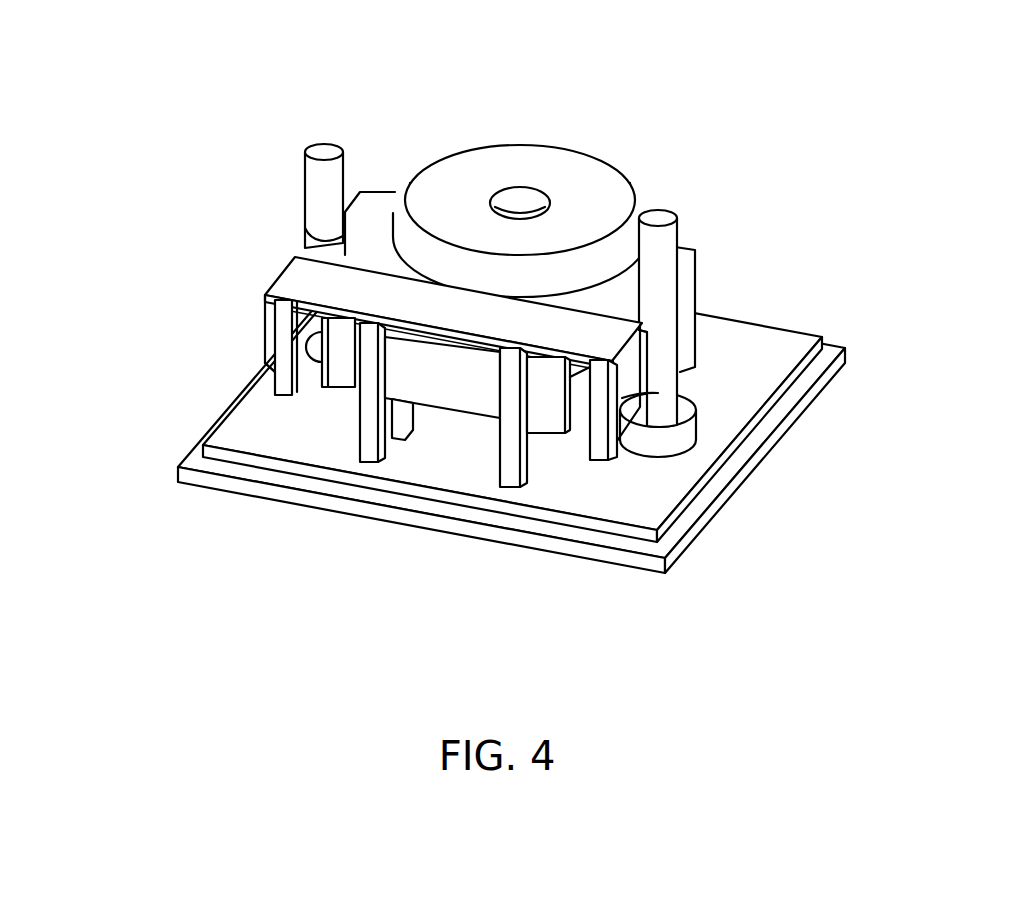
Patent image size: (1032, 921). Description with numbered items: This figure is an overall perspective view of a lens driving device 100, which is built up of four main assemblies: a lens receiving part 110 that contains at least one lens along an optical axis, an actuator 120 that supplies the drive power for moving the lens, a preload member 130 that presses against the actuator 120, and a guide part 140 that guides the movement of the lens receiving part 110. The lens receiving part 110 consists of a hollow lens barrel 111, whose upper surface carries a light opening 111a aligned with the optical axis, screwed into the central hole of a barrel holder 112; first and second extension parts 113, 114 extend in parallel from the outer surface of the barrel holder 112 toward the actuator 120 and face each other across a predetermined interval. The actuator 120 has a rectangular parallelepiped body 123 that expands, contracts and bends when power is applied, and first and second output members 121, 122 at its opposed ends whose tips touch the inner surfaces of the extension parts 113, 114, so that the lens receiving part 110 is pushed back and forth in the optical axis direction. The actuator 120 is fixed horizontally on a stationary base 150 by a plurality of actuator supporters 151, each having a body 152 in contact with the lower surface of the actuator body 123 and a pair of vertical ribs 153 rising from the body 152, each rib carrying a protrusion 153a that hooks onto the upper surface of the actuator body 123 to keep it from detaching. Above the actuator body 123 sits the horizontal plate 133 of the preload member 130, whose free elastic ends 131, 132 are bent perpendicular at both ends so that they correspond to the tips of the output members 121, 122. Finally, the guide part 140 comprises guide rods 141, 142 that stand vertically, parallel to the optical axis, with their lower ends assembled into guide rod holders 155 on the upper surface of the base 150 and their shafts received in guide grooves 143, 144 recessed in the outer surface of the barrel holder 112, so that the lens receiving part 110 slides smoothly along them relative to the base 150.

The lens driving device 100 is at (603, 84).
The lens receiving part 110 is at (797, 123).
The lens barrel 111 is at (612, 187).
The light opening 111a is at (537, 195).
The barrel holder 112 is at (690, 277).
The first extension part 113 is at (268, 388).
The second extension part 114 is at (610, 447).
The actuator 120 is at (565, 627).
The first output member 121 is at (283, 393).
The second output member 122 is at (573, 407).
The actuator body 123 is at (467, 400).
The preload member 130 is at (142, 298).
The free elastic end 131 is at (267, 332).
The free elastic end 132 is at (683, 442).
The horizontal plate 133 is at (288, 270).
The guide part 140 is at (212, 192).
The guide rod 141 is at (315, 185).
The guide rod 142 is at (663, 332).
The guide groove 143 is at (315, 232).
The guide groove 144 is at (647, 312).
The base 150 is at (748, 398).
The actuator supporter 151 is at (365, 578).
The body 152 is at (367, 405).
The vertical rib 153 is at (330, 402).
The protrusion 153a is at (297, 382).
The guide rod holder 155 is at (630, 395).